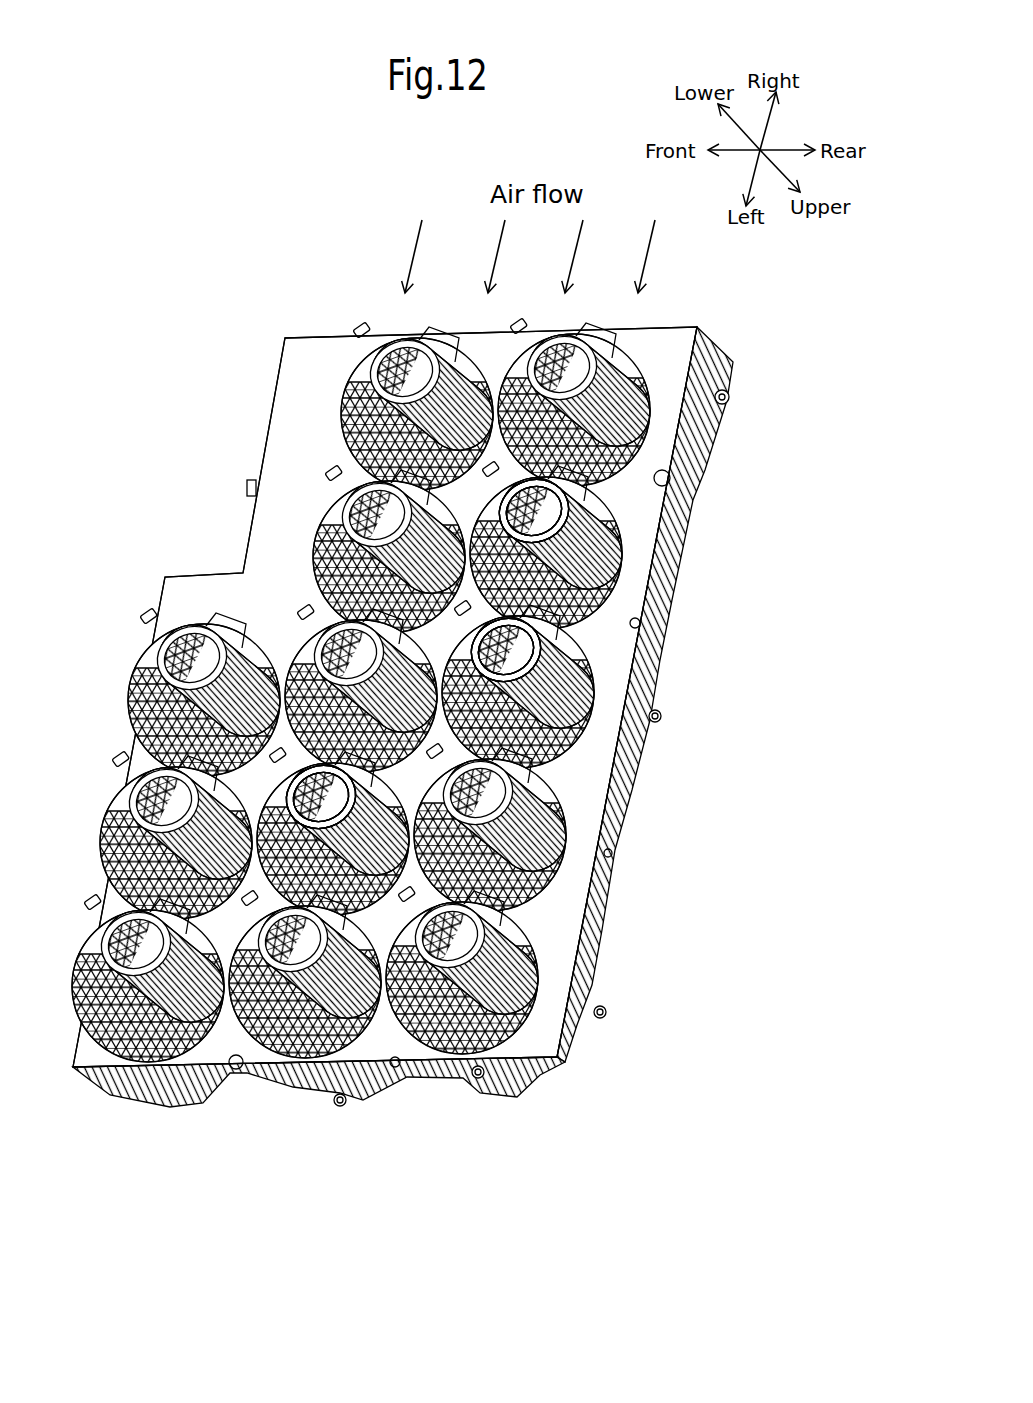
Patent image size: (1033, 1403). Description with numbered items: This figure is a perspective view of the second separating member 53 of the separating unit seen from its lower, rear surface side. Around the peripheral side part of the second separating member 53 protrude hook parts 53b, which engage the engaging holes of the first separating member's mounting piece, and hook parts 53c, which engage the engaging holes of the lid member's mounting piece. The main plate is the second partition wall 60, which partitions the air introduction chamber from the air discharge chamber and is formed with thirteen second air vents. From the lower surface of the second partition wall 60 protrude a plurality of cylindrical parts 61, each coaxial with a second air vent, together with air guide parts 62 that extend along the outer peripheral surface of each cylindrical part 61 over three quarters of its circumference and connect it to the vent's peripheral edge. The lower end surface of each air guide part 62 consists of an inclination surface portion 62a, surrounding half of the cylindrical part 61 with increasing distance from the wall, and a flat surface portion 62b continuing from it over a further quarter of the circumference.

The second separating member 53 is at (150, 378).
The hook parts 53b is at (660, 552).
The hook parts 53c is at (724, 402).
The second partition wall 60 is at (275, 565).
The cylindrical part 61 is at (510, 505).
The air guide part 62 is at (760, 578).
The inclination surface portion 62a is at (567, 587).
The flat surface portion 62b is at (583, 505).